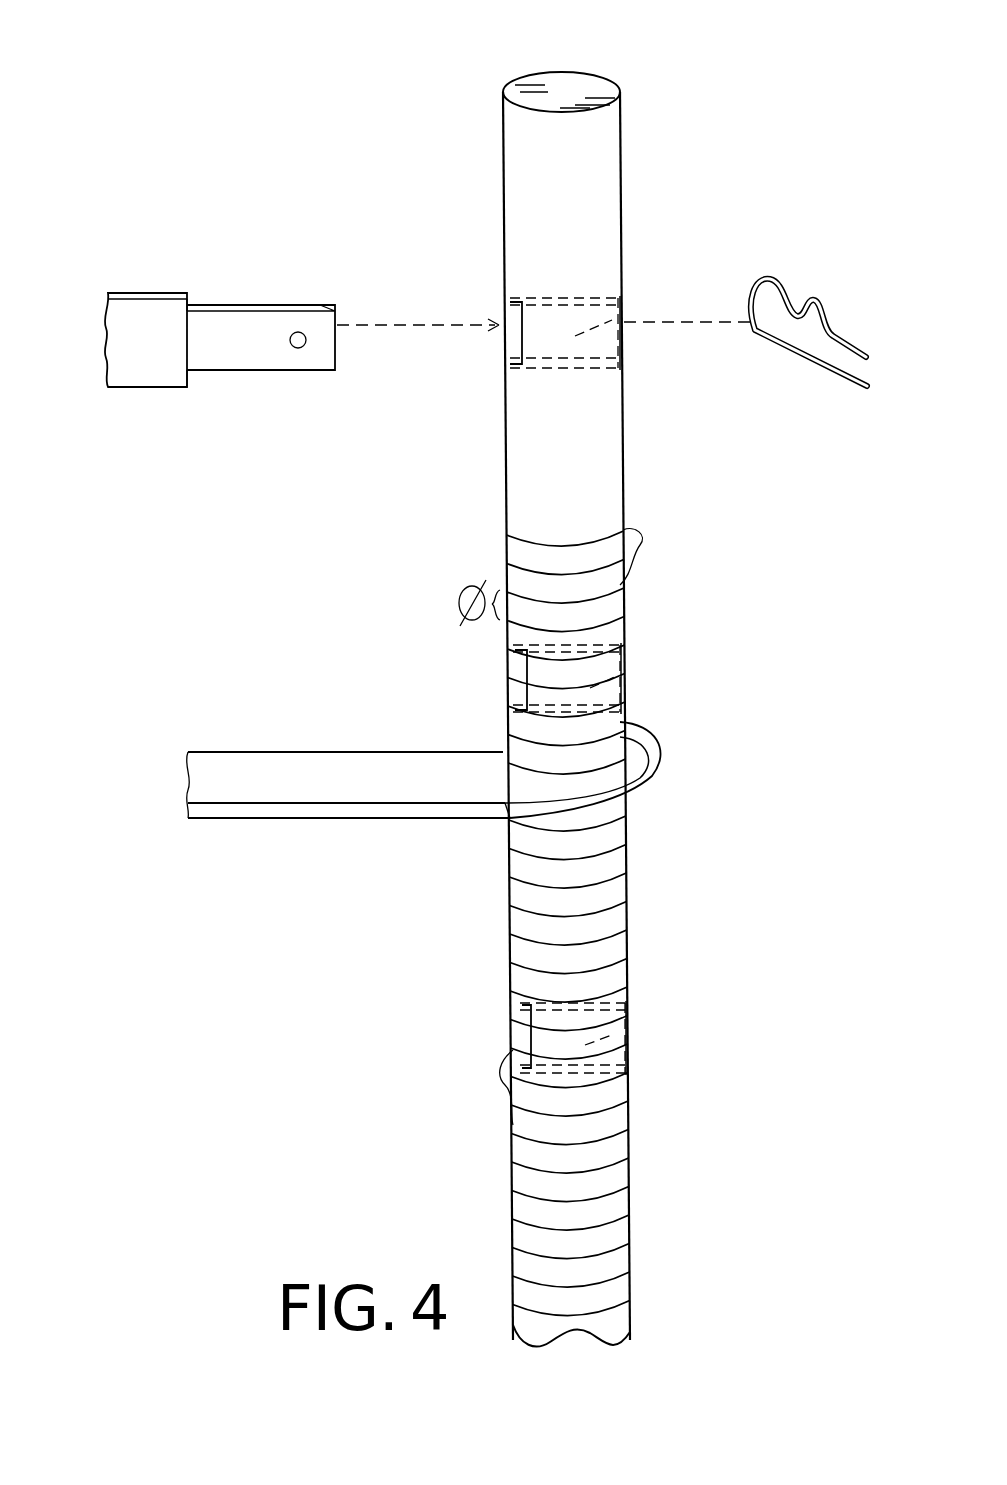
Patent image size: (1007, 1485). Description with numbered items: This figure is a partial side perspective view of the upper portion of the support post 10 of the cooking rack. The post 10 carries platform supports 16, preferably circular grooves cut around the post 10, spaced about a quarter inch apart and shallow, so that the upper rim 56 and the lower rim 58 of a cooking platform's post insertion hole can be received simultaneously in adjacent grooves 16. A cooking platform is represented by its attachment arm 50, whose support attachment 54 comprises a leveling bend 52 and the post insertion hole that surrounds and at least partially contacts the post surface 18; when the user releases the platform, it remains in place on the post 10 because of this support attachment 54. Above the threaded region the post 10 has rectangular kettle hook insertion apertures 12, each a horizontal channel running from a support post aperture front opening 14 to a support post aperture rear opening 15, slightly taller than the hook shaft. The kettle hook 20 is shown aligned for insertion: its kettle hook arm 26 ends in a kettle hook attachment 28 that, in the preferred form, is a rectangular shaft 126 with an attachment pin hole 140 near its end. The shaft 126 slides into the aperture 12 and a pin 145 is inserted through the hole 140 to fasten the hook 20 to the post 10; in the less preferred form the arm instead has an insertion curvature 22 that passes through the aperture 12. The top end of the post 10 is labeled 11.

The support post 10 is at (622, 440).
The top end of post 11 is at (572, 88).
The kettle hook insertion aperture 12 is at (624, 312).
The support post aperture front opening 14 is at (506, 356).
The support post aperture rear opening 15 is at (623, 287).
The platform supports 16 is at (634, 540).
The post surface 18 is at (580, 524).
The kettle hook 20 is at (208, 312).
The insertion curvature 22 is at (285, 372).
The kettle hook arm 26 is at (131, 318).
The kettle hook attachment 28 is at (220, 408).
The rectangular shaft 126 is at (232, 320).
The attachment pin hole 140 is at (302, 332).
The pin 145 is at (765, 282).
The attachment arm 50 is at (272, 790).
The leveling bend 52 is at (440, 835).
The support attachment 54 is at (475, 804).
The upper rim 56 is at (640, 728).
The lower rim 58 is at (511, 832).